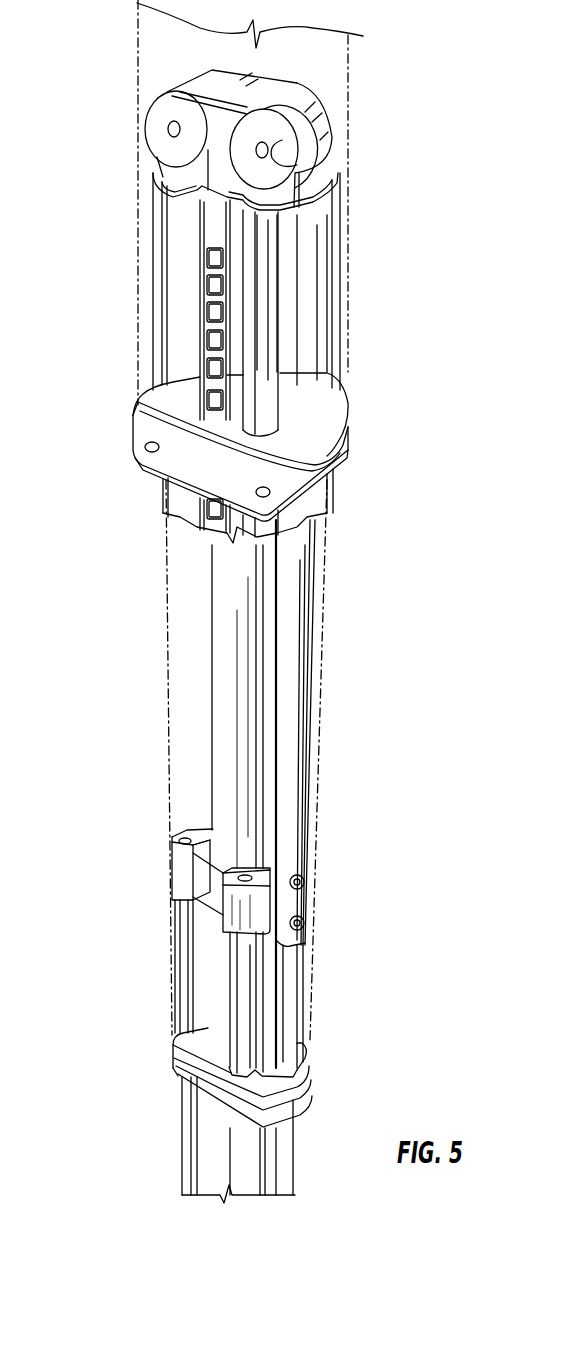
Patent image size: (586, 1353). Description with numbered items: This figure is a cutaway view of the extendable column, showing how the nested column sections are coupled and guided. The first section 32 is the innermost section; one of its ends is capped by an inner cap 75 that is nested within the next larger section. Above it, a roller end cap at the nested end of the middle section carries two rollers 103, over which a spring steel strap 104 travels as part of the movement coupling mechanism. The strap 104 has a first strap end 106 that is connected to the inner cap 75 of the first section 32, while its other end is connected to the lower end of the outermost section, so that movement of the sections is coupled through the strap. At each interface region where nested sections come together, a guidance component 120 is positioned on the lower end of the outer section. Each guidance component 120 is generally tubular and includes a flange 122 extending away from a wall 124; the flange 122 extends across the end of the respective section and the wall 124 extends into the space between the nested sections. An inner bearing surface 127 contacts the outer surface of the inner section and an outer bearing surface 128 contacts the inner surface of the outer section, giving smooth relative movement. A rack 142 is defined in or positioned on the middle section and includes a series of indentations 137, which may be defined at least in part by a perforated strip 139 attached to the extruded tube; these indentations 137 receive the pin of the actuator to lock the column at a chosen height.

The first section 32 is at (208, 1155).
The inner cap 75 is at (203, 882).
The rollers 103 is at (165, 108).
The spring steel strap 104 is at (295, 682).
The first strap end 106 is at (295, 903).
The guidance component 120 is at (287, 726).
The flange 122 is at (345, 452).
The wall 124 is at (340, 408).
The inner bearing surface 127 is at (232, 384).
The outer bearing surface 128 is at (197, 777).
The indentations 137 is at (208, 342).
The perforated strip 139 is at (205, 392).
The rack 142 is at (205, 268).